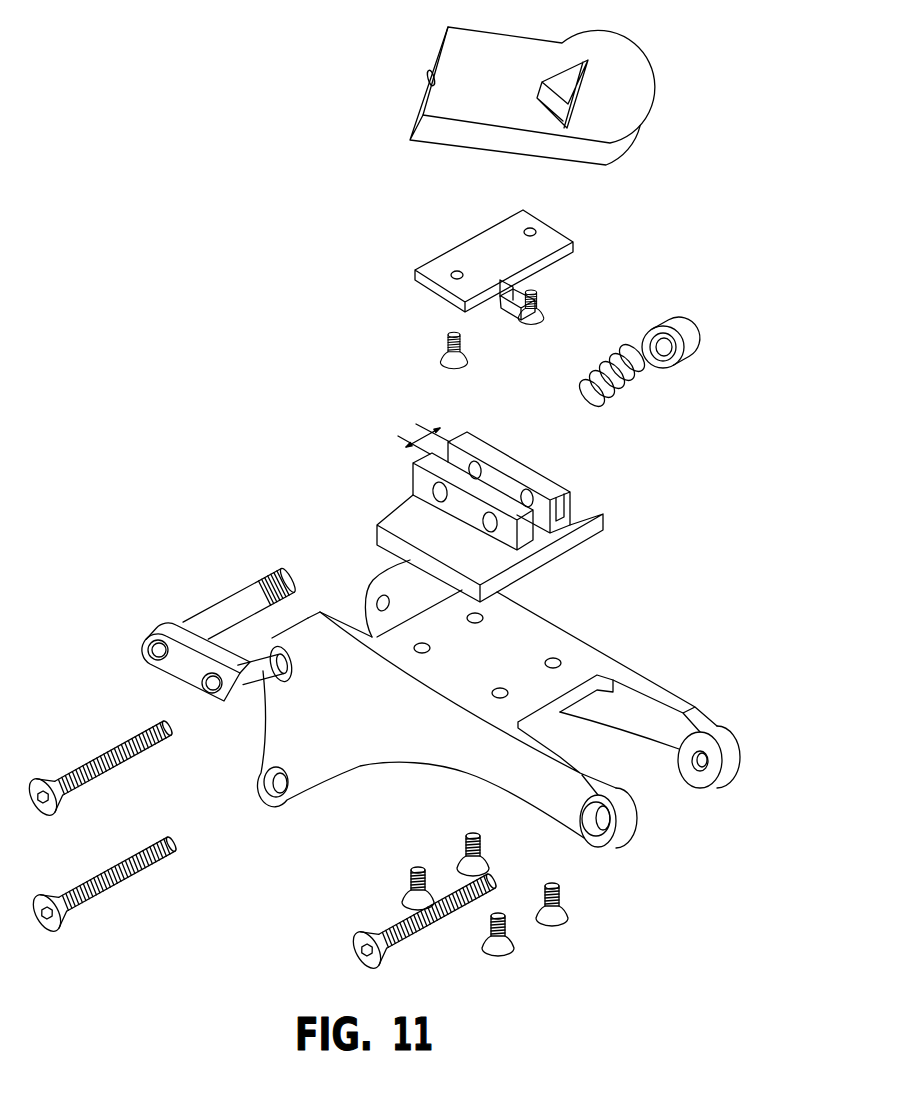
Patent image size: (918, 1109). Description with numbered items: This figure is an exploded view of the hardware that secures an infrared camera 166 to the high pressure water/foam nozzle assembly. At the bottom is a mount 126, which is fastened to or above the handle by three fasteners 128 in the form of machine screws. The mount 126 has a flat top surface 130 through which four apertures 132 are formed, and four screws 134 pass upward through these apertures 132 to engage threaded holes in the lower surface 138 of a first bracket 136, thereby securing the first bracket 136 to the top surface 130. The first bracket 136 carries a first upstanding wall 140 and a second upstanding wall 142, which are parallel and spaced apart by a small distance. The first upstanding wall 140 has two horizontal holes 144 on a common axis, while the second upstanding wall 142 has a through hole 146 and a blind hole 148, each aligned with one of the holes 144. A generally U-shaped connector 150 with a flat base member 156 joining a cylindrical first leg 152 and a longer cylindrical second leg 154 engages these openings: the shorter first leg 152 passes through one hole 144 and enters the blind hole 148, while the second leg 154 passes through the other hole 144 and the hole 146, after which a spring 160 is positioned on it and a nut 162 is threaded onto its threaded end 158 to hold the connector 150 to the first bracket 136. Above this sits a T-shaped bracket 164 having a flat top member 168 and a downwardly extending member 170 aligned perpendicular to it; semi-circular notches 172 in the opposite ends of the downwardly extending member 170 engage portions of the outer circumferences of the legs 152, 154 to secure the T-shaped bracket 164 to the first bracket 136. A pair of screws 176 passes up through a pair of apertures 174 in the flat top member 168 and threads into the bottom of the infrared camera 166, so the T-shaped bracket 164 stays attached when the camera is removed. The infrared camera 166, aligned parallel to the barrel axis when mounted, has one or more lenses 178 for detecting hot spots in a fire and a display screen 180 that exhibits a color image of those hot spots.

The mount 126 is at (736, 535).
The fasteners 128 is at (78, 770).
The top surface 130 is at (479, 704).
The apertures 132 is at (540, 595).
The screws 134 is at (458, 866).
The first bracket 136 is at (597, 487).
The lower surface 138 is at (593, 542).
The first upstanding wall 140 is at (412, 477).
The second upstanding wall 142 is at (487, 441).
The holes 144 is at (424, 495).
The hole 146 is at (483, 471).
The blind hole 148 is at (538, 495).
The U-shaped connector 150 is at (193, 582).
The first leg 152 is at (266, 684).
The second leg 154 is at (198, 617).
The base member 156 is at (174, 679).
The threaded end 158 is at (287, 572).
The spring 160 is at (608, 356).
The nut 162 is at (671, 318).
The T-shaped bracket 164 is at (458, 229).
The infrared camera 166 is at (529, 86).
The flat top member 168 is at (490, 240).
The downwardly extending member 170 is at (489, 304).
The semi-circular notches 172 is at (510, 311).
The apertures 174 is at (452, 271).
The screws 176 is at (467, 362).
The lenses 178 is at (428, 78).
The display screen 180 is at (583, 87).